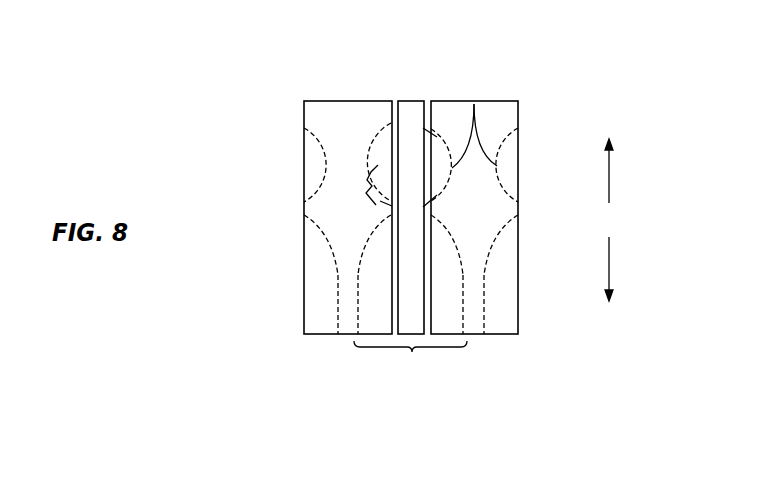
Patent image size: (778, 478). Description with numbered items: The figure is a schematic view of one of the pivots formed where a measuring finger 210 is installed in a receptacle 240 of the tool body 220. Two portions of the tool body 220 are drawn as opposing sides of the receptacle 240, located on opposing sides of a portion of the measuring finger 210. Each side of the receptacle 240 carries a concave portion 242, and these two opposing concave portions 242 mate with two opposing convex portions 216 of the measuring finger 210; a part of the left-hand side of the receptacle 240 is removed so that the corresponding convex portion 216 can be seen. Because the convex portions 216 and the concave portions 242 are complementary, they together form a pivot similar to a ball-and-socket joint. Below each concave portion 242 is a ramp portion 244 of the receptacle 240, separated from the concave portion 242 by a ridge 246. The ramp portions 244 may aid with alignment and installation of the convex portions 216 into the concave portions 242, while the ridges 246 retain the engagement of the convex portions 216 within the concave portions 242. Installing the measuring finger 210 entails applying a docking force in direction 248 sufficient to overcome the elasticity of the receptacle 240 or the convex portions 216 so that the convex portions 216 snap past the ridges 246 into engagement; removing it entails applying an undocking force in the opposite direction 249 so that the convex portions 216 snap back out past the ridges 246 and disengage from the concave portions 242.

The measuring finger 210 is at (412, 100).
The tool body 220 is at (322, 111).
The concave portion 242 is at (323, 158).
The convex portion 216 is at (392, 203).
The ridge 246 is at (307, 214).
The ramp portion 244 is at (358, 303).
The receptacle 240 is at (412, 353).
The direction 248 is at (609, 170).
The direction 249 is at (609, 270).